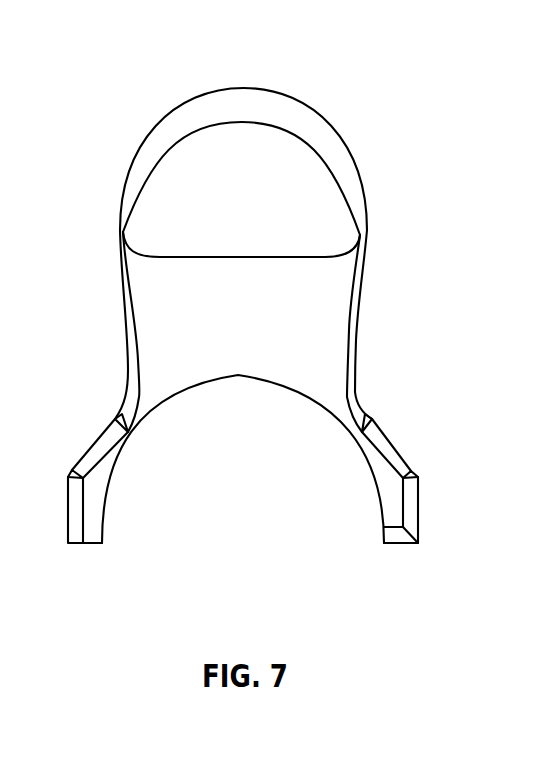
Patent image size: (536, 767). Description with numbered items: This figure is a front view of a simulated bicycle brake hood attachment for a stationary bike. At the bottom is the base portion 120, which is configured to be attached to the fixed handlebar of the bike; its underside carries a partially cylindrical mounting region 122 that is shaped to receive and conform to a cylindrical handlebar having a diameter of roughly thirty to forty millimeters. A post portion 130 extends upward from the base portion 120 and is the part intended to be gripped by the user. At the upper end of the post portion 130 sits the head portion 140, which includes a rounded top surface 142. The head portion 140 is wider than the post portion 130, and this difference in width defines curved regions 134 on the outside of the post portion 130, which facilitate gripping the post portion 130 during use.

The base portion 120 is at (386, 423).
The partially cylindrical mounting region 122 is at (238, 376).
The post portion 130 is at (255, 380).
The curved regions 134 is at (127, 328).
The head portion 140 is at (254, 132).
The rounded top surface 142 is at (235, 88).